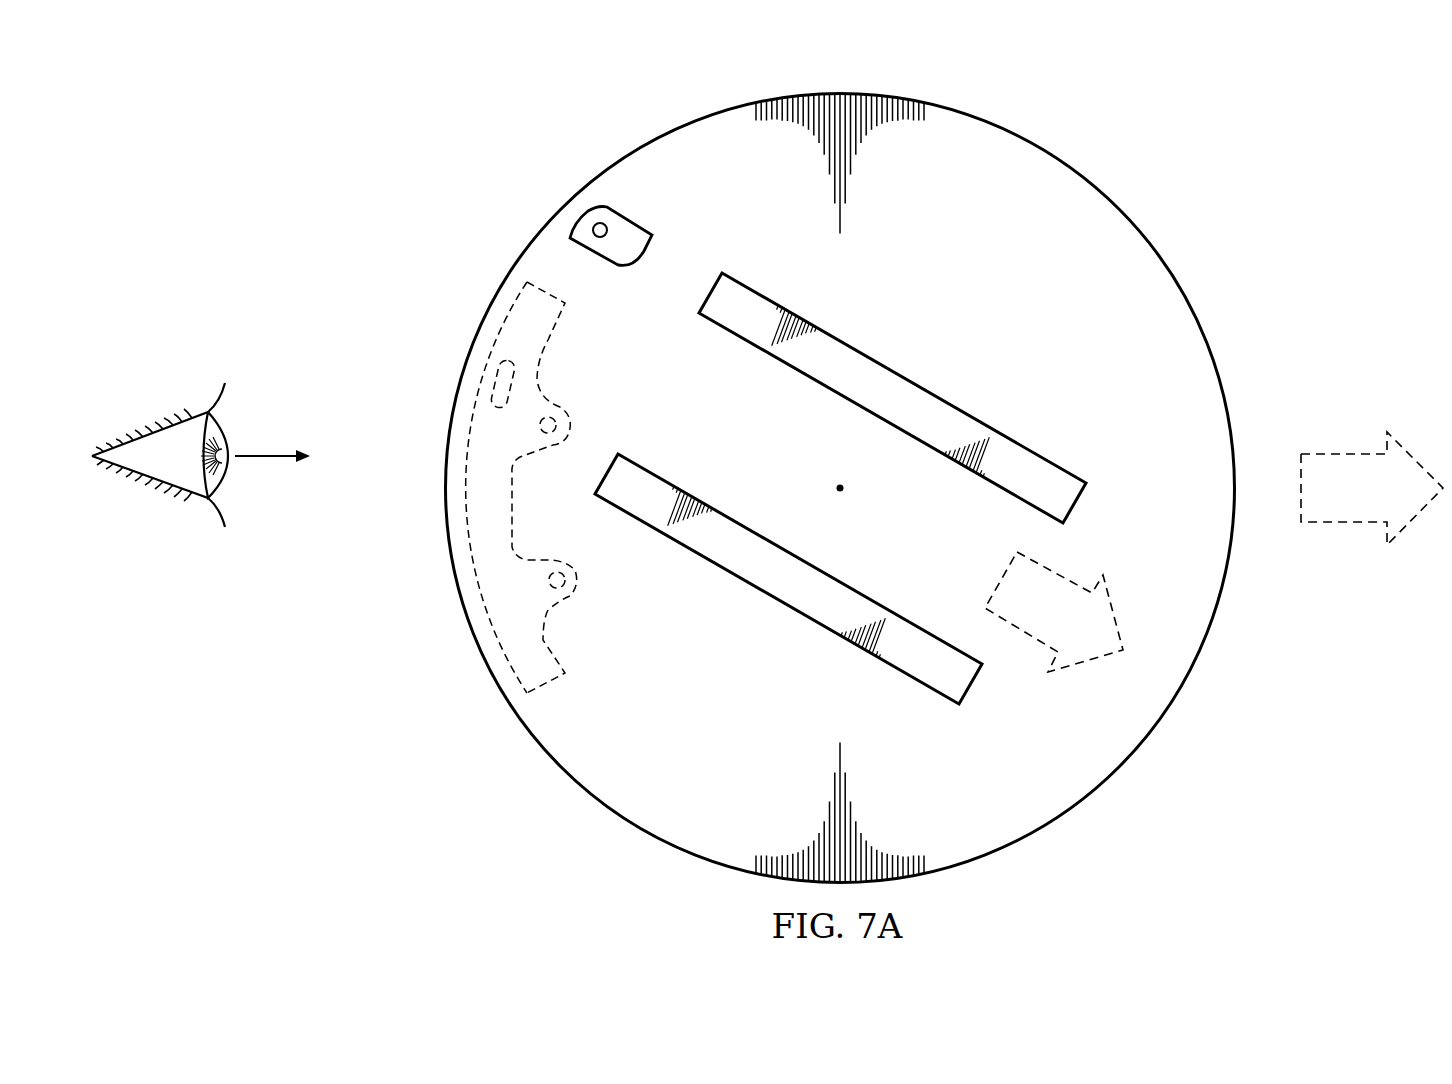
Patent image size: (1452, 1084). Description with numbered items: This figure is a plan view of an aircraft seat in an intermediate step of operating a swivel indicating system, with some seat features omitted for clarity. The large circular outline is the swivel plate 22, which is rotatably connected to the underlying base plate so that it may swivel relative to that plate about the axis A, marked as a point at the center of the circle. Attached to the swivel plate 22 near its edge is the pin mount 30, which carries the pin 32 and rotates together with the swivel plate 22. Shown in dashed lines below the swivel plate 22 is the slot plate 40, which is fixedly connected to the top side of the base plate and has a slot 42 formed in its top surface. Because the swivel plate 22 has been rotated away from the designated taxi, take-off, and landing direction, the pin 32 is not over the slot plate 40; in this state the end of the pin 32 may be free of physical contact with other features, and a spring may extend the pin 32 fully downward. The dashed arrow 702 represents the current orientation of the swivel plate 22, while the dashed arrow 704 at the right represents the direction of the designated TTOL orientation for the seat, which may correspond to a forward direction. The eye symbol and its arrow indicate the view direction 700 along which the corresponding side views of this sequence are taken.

The swivel plate 22 is at (723, 110).
The pin mount 30 is at (616, 274).
The pin 32 is at (598, 224).
The slot plate 40 is at (460, 541).
The slot 42 is at (497, 390).
The view direction 700 is at (272, 452).
The arrow representing orientation of the swivel plate 702 is at (1003, 575).
The arrow representing TTOL direction 704 is at (1340, 523).
The axis A is at (827, 480).